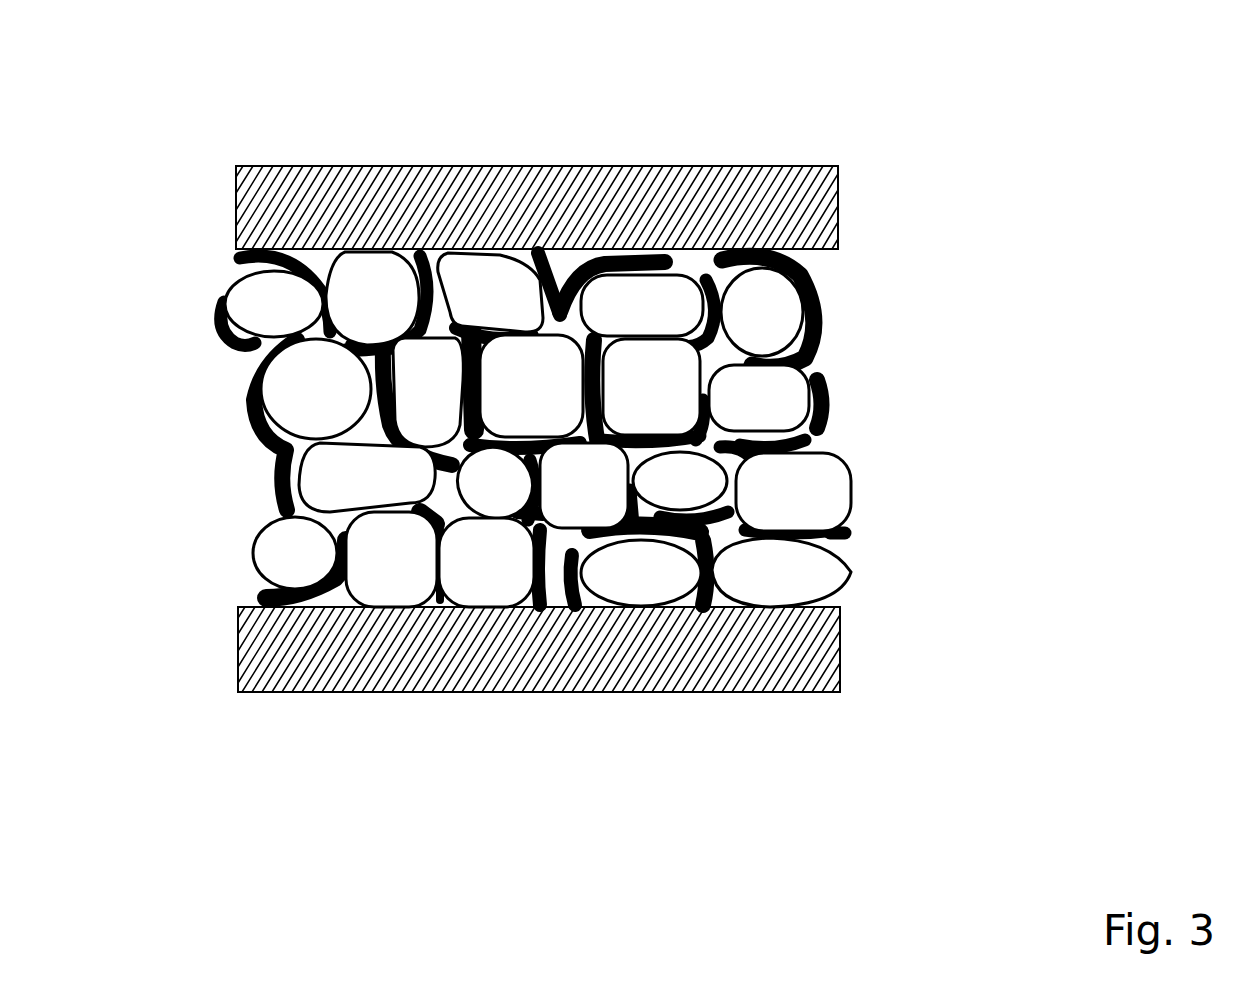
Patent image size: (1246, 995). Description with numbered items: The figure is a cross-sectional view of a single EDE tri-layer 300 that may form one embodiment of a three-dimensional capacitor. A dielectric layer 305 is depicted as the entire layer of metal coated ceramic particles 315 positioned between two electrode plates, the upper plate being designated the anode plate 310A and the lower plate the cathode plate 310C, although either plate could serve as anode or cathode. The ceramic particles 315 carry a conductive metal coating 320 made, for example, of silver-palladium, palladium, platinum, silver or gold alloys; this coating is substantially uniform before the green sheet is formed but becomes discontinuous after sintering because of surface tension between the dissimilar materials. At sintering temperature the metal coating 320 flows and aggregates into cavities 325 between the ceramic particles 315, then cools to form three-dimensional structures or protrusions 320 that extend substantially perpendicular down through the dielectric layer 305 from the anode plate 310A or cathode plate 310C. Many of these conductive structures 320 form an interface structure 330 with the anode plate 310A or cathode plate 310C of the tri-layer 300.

The EDE tri-layer 300 is at (1170, 58).
The dielectric layer 305 is at (210, 260).
The anode plate 310A is at (812, 205).
The cathode plate 310C is at (823, 655).
The ceramic particles 315 is at (778, 410).
The metal coating 320 is at (805, 287).
The cavities 325 is at (697, 263).
The interface structure 330 is at (513, 250).